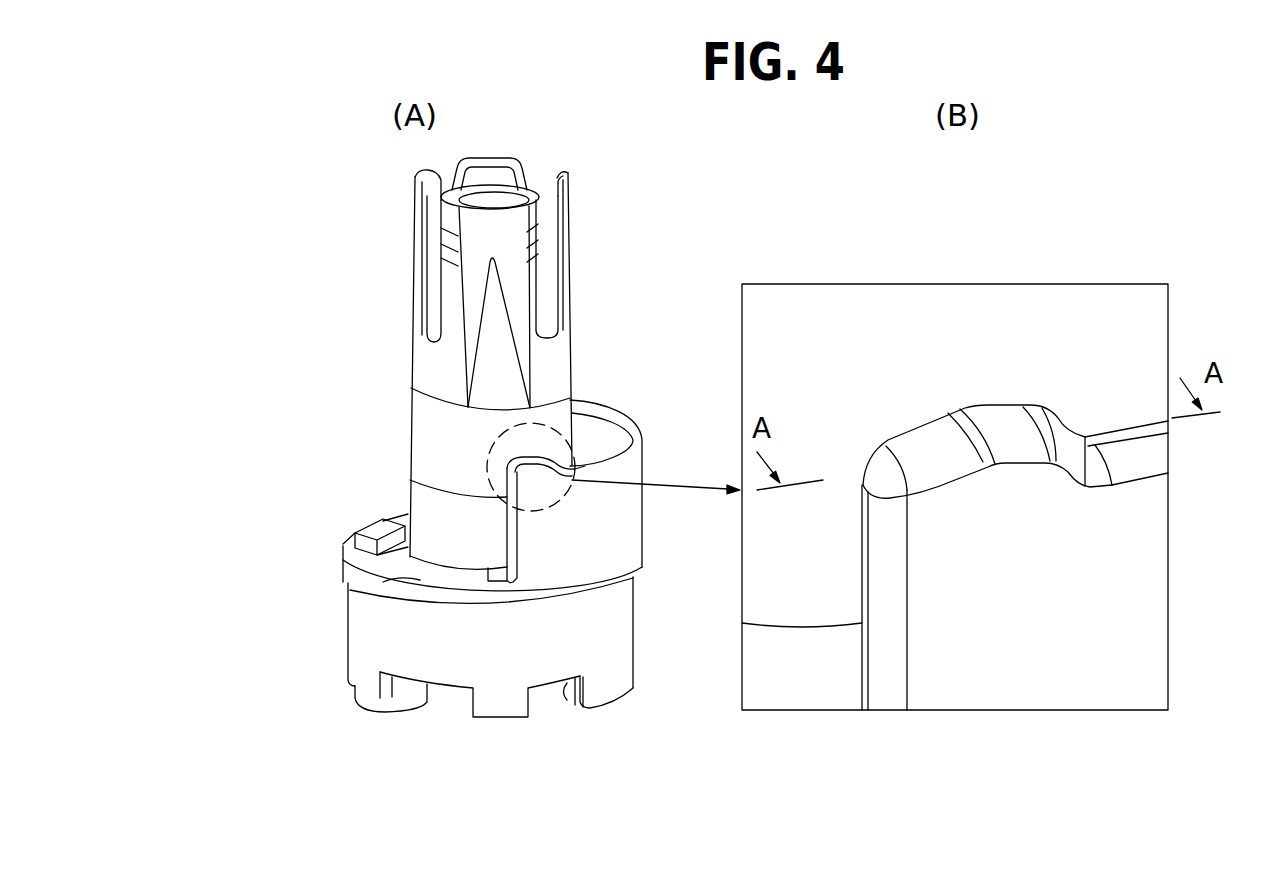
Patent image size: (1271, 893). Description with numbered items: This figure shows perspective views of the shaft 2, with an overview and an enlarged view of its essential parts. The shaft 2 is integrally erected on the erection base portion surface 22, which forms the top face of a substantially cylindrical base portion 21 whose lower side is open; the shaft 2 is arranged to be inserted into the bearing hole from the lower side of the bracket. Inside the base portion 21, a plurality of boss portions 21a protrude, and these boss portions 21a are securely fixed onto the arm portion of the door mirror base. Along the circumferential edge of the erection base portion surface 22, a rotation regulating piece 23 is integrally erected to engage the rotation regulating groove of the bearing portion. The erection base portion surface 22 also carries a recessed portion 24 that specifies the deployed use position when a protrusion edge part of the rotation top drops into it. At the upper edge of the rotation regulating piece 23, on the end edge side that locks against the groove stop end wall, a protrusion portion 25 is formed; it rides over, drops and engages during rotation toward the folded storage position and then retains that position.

The shaft 2 is at (398, 273).
The base portion 21 is at (348, 630).
The boss portions 21a is at (390, 711).
The erection base portion surface 22 is at (383, 581).
The rotation regulating piece 23 is at (643, 510).
The recessed portion 24 is at (383, 547).
The protrusion portion 25 is at (528, 460).